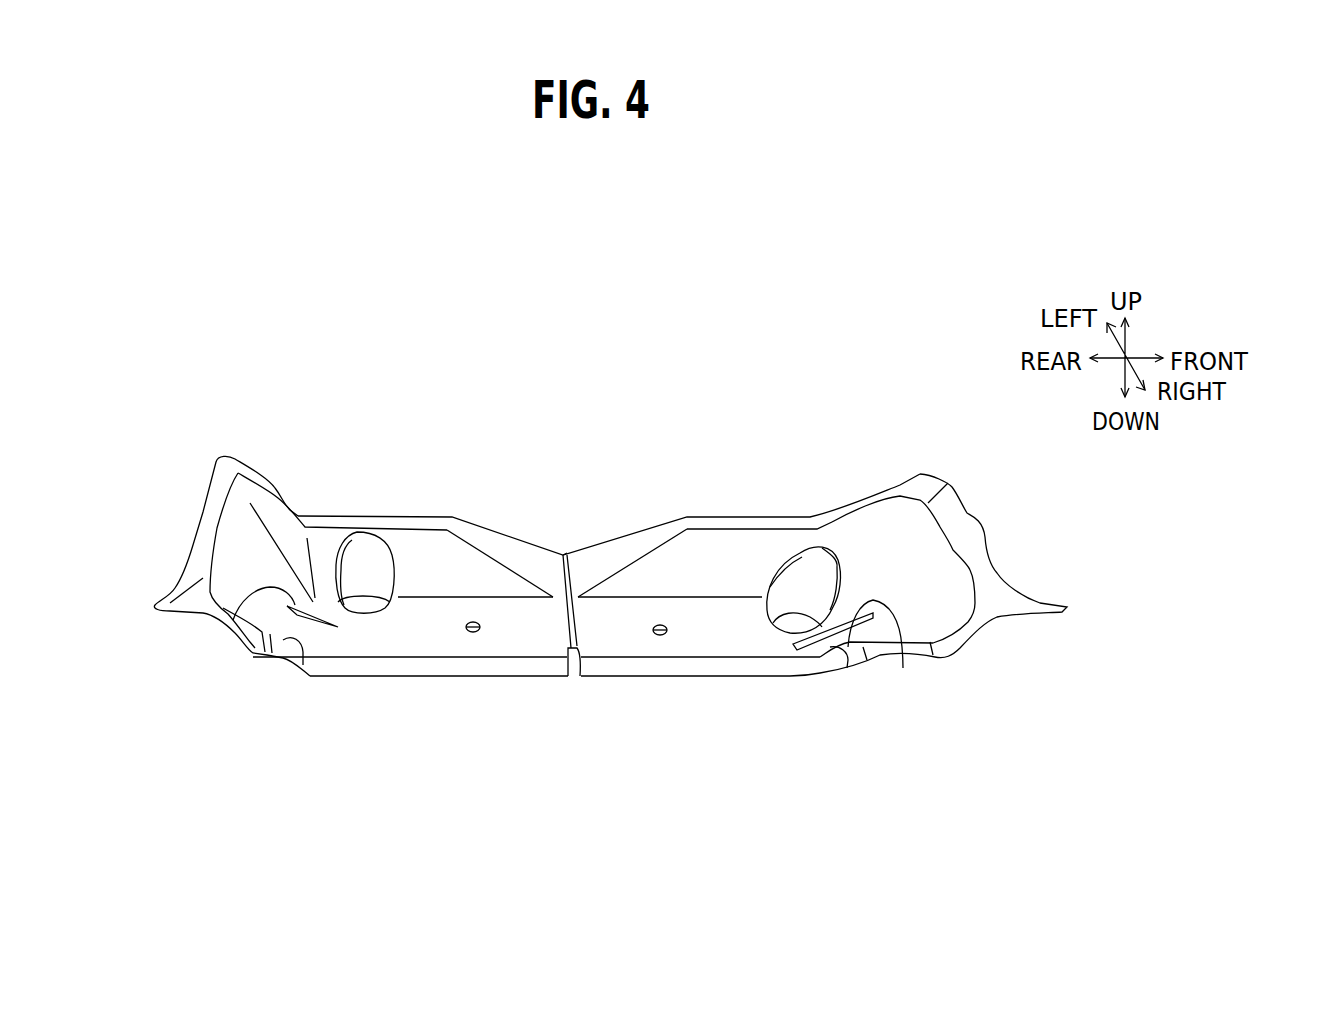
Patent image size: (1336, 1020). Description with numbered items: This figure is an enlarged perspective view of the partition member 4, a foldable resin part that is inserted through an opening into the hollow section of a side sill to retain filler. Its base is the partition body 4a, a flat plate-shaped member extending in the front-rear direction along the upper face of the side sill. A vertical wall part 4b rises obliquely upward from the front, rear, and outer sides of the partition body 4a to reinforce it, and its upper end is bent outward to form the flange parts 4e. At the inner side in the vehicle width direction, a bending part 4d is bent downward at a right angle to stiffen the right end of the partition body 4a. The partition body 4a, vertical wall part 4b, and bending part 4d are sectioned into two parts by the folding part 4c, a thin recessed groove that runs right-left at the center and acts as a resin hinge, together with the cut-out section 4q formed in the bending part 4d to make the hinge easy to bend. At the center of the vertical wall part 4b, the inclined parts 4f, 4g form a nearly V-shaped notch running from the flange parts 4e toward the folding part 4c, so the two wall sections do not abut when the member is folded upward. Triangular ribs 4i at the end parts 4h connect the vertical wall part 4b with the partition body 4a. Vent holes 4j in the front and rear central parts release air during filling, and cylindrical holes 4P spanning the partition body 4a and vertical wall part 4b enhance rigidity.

The partition member 4 is at (686, 414).
The partition body 4a is at (495, 650).
The vertical wall part 4b is at (423, 560).
The folding part 4c is at (562, 552).
The bending part 4d is at (428, 677).
The flange parts 4e is at (215, 505).
The inclined part 4f is at (618, 550).
The inclined part 4g is at (503, 550).
The end parts 4h is at (284, 675).
The ribs 4i is at (243, 627).
The vent holes 4j is at (480, 626).
The cylindrical holes 4P is at (358, 552).
The cut-out section 4q is at (572, 680).